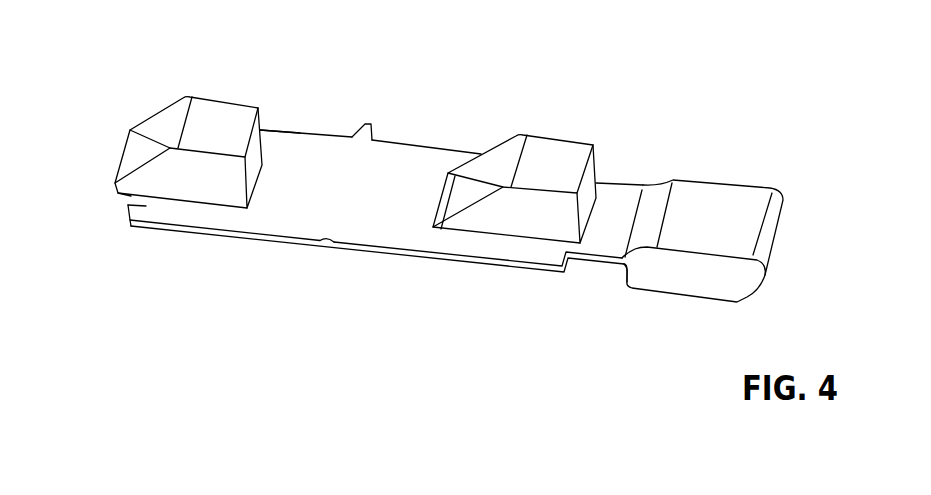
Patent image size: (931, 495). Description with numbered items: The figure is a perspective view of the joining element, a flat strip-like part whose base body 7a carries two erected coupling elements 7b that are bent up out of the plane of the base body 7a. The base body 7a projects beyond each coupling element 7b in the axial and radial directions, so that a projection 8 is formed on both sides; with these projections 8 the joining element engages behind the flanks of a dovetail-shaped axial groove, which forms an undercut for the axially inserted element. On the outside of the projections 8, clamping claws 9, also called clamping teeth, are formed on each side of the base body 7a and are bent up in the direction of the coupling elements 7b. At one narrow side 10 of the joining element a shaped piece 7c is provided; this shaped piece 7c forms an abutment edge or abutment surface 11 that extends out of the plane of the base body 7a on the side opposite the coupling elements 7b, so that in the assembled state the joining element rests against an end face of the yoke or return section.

The base body 7a is at (295, 225).
The coupling element 7b is at (217, 113).
The shaped piece 7c is at (712, 202).
The projection 8 is at (128, 206).
The clamping claw 9 is at (368, 124).
The narrow side 10 is at (622, 168).
The abutment edge 11 is at (627, 275).